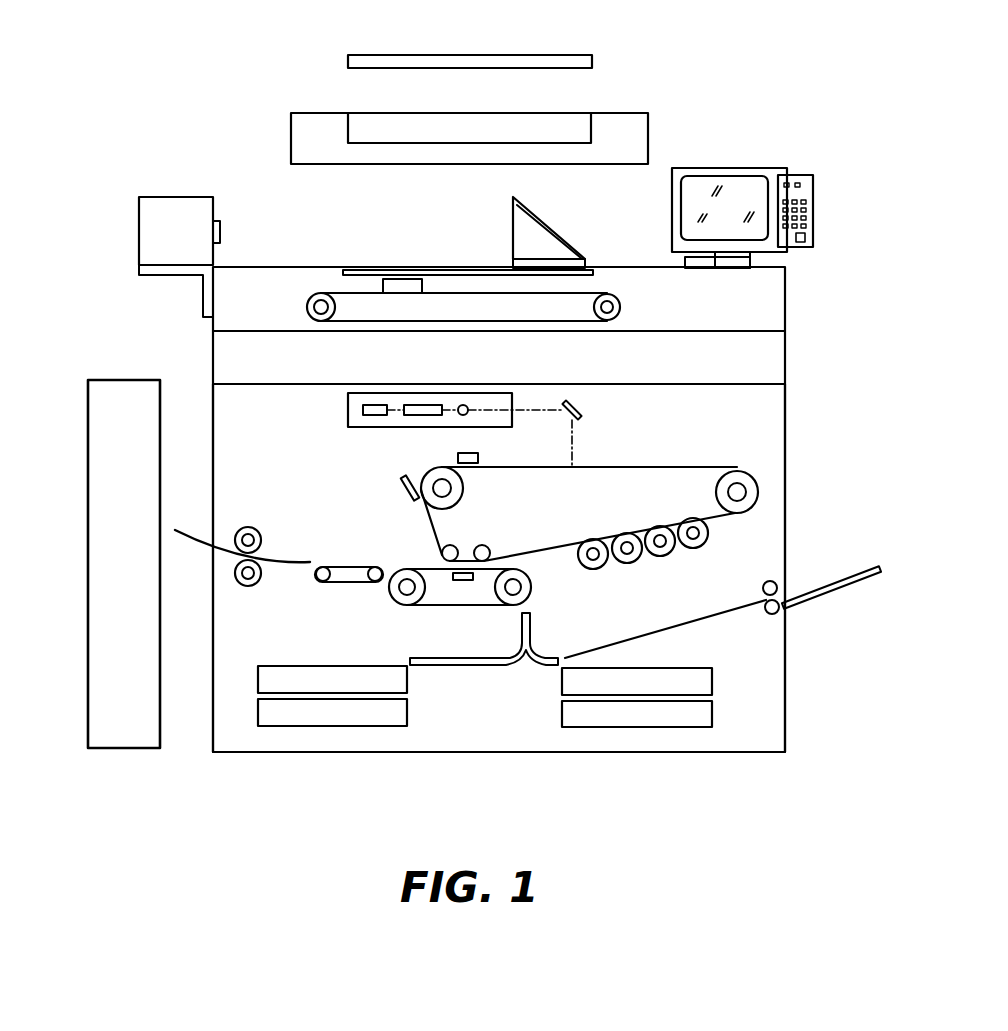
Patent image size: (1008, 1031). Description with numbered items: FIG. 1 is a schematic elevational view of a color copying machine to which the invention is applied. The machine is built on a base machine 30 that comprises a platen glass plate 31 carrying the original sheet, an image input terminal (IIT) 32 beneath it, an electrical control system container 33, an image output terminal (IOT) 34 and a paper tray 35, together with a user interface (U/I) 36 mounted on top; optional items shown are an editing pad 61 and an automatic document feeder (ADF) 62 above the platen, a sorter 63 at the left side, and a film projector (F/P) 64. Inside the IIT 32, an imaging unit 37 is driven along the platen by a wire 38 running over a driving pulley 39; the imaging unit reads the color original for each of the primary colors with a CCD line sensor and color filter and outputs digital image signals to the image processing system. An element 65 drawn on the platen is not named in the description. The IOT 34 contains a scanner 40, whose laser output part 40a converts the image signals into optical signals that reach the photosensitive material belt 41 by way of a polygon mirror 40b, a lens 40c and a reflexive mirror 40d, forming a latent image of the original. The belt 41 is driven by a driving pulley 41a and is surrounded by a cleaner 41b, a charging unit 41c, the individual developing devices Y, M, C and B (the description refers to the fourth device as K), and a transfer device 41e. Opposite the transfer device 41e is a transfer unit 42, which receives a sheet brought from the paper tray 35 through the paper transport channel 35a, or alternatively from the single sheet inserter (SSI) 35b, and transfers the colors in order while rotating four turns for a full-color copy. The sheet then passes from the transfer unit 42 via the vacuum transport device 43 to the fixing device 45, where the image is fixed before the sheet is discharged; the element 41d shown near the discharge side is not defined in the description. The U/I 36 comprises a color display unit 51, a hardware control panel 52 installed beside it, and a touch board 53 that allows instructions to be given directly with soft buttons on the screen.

The base machine 30 is at (294, 772).
The platen glass plate 31 is at (455, 268).
The image input terminal (IIT) 32 is at (762, 298).
The electrical control system container 33 is at (762, 365).
The image output terminal (IOT) 34 is at (714, 453).
The paper tray 35 is at (418, 741).
The paper transport channel 35a is at (541, 646).
The single sheet inserter (SSI) 35b is at (838, 594).
The user interface (U/I) 36 is at (738, 154).
The imaging unit 37 is at (402, 285).
The wire 38 is at (340, 292).
The driving pulley 39 is at (608, 296).
The scanner 40 is at (348, 410).
The laser output part 40a is at (376, 417).
The polygon mirror 40b is at (423, 417).
The lens 40c is at (467, 403).
The reflexive mirror 40d is at (575, 404).
The photosensitive material belt 41 is at (628, 471).
The driving pulley 41a is at (458, 500).
The cleaner 41b is at (403, 487).
The charging unit 41c is at (480, 458).
The output paper path 41d is at (672, 608).
The transfer device 41e is at (464, 583).
The transfer unit 42 is at (433, 608).
The vacuum transport device 43 is at (343, 583).
The fixing device 45 is at (265, 532).
The color display unit 51 is at (745, 197).
The hardware control panel 52 is at (813, 213).
The touch board 53 is at (697, 167).
The editing pad 61 is at (547, 54).
The automatic document feeder (ADF) 62 is at (615, 113).
The sorter 63 is at (88, 562).
The film projector (F/P) 64 is at (180, 197).
The lens / prism 65 is at (550, 220).
The developing device B is at (596, 569).
The developing device for M (magenta) M is at (629, 563).
The developing device for C (cyan) C is at (663, 556).
The developing device for Y (yellow) Y is at (697, 548).